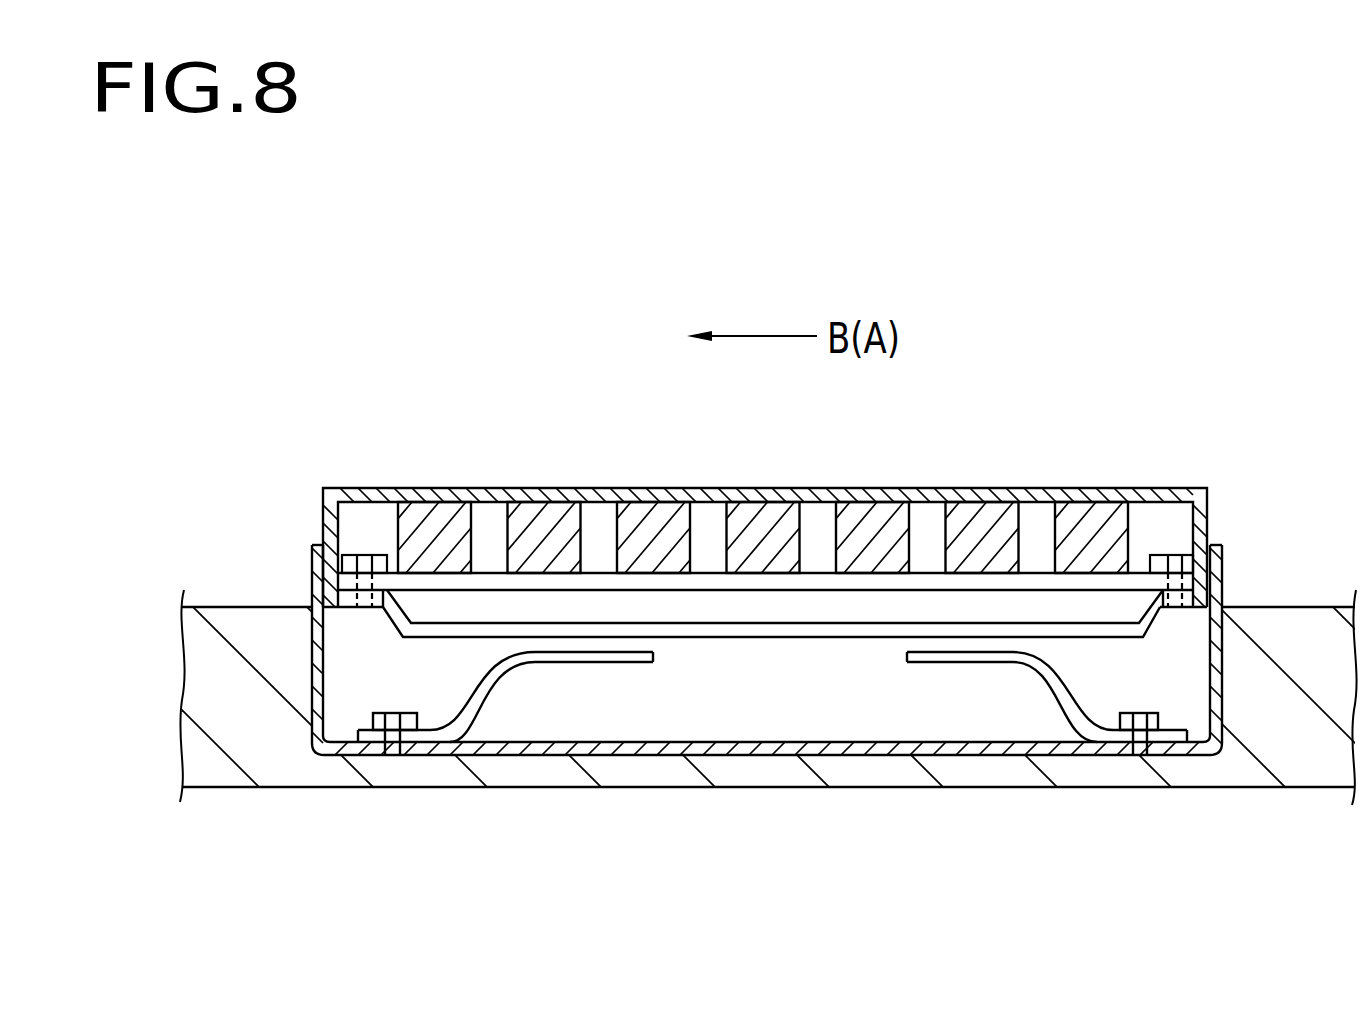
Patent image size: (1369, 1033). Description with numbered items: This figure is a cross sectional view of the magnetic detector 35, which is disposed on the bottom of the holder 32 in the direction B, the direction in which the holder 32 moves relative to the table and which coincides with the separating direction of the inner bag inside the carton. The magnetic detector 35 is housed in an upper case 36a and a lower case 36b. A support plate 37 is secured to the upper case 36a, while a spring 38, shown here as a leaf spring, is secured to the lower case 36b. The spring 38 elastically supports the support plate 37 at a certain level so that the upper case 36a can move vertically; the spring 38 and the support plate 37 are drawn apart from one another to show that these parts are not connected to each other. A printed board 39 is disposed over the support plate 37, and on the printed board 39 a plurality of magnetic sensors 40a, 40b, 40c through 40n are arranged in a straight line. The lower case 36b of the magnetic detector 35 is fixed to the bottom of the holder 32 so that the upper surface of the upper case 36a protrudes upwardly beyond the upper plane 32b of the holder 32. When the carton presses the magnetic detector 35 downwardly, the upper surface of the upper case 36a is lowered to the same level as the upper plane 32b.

The holder 32 is at (277, 767).
The upper plane 32b is at (248, 602).
The magnetic detector 35 is at (1046, 381).
The upper case 36a is at (1208, 520).
The lower case 36b is at (842, 750).
The support plate 37 is at (793, 632).
The spring 38 is at (570, 662).
The printed board 39 is at (703, 583).
The magnetic sensor 40a is at (1093, 487).
The magnetic sensor 40b is at (982, 490).
The magnetic sensor 40c is at (877, 487).
The magnetic sensor 40n is at (437, 500).